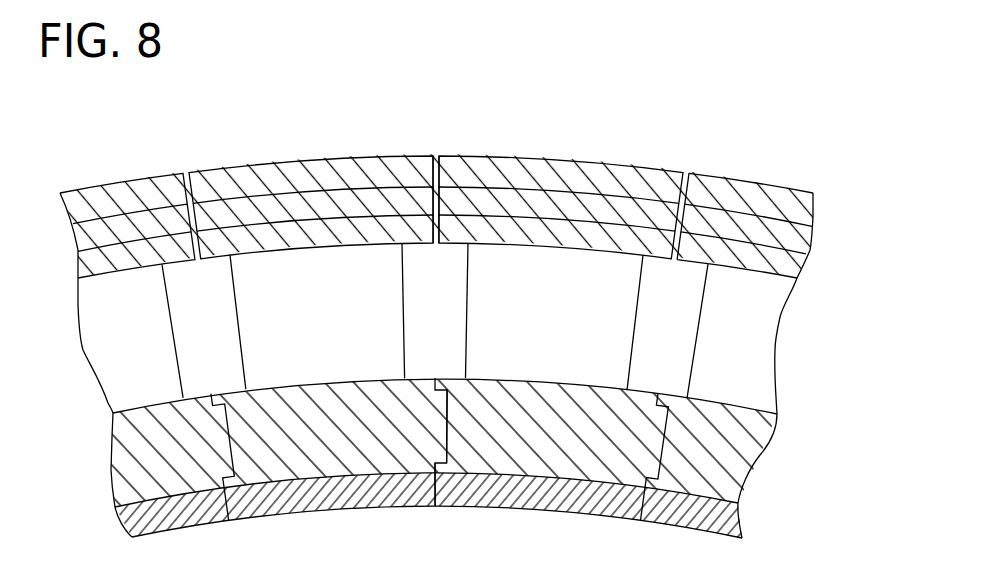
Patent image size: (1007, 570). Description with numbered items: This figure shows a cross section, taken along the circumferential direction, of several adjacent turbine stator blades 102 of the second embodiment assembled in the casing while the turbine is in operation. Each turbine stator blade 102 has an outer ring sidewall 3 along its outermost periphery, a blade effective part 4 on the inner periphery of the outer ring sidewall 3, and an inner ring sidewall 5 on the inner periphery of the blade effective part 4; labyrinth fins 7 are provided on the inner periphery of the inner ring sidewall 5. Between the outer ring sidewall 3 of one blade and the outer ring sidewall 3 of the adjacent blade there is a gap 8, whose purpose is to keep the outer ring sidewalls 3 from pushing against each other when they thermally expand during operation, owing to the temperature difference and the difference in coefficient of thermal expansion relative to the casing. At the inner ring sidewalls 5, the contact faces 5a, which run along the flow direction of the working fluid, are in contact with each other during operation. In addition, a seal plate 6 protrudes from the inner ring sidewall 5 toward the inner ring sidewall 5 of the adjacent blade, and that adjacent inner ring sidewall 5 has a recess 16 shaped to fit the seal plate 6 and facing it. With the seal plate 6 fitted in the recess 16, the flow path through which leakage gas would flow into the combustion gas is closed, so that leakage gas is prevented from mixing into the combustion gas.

The turbine stator blade 102 is at (272, 142).
The outer ring sidewall 3 is at (88, 237).
The blade effective part 4 is at (112, 343).
The inner ring sidewall 5 is at (128, 462).
The contact faces 5a is at (441, 443).
The seal plate 6 is at (446, 461).
The labyrinth fins 7 is at (128, 514).
The gap 8 is at (437, 153).
The recess 16 is at (468, 476).